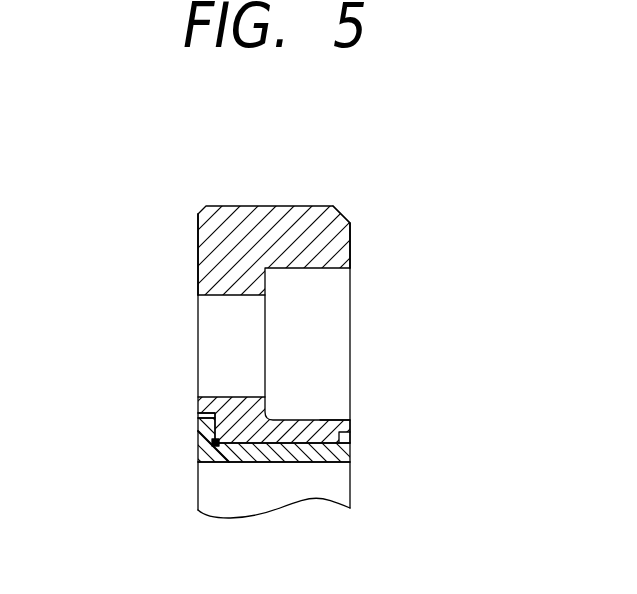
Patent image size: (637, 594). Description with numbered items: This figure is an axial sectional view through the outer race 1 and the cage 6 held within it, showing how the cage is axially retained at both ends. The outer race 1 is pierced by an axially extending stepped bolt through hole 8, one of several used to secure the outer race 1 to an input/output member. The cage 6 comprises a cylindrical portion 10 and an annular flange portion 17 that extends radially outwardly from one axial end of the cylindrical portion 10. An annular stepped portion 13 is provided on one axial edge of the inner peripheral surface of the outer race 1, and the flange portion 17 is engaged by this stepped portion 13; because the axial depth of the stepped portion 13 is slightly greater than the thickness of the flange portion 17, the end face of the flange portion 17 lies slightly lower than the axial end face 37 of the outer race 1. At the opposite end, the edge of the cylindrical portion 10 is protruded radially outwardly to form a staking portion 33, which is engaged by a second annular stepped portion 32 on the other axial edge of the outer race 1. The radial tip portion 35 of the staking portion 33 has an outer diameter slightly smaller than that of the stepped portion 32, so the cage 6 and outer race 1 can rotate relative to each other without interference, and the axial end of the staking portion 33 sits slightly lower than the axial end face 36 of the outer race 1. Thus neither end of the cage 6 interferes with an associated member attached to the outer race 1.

The outer race 1 is at (258, 212).
The cage 6 is at (214, 472).
The bolt through hole 8 is at (307, 270).
The cylindrical portion 10 is at (285, 462).
The annular stepped portion 13 is at (202, 404).
The flange portion 17 is at (215, 443).
The annular stepped portion 32 is at (346, 420).
The staking portion 33 is at (350, 460).
The radial tip portion 35 is at (352, 440).
The axial end face 36 is at (350, 241).
The axial end face 37 is at (198, 255).